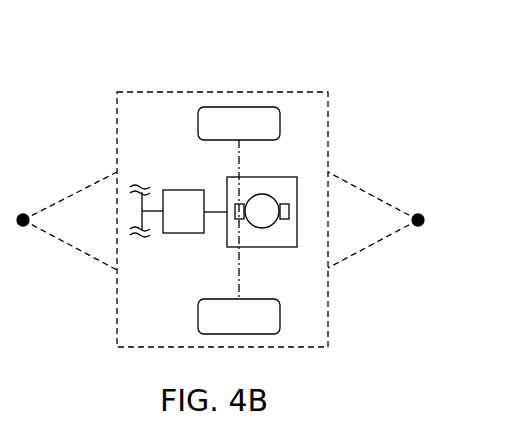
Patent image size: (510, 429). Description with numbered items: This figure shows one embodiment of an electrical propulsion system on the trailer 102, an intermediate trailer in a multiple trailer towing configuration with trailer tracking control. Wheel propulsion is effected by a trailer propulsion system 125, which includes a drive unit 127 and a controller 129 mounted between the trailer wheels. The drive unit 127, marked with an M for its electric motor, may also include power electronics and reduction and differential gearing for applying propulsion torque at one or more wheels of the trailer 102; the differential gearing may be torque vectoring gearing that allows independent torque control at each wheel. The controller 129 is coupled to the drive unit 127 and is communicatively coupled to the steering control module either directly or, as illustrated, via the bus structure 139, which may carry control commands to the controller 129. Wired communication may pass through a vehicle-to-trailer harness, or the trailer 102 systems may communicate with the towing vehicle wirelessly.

The trailer 102 is at (150, 92).
The trailer propulsion system 125 is at (193, 174).
The drive unit 127 is at (257, 177).
The controller 129 is at (198, 219).
The bus structure 139 is at (148, 212).